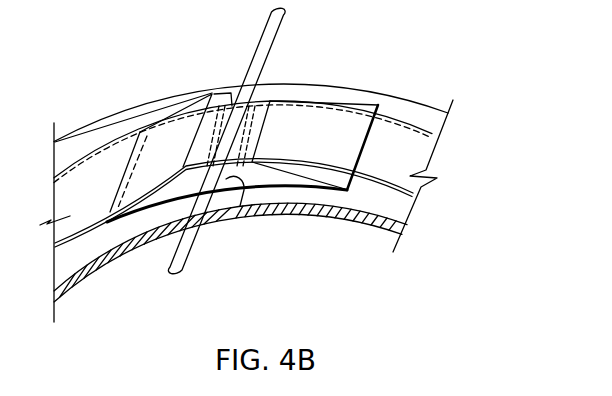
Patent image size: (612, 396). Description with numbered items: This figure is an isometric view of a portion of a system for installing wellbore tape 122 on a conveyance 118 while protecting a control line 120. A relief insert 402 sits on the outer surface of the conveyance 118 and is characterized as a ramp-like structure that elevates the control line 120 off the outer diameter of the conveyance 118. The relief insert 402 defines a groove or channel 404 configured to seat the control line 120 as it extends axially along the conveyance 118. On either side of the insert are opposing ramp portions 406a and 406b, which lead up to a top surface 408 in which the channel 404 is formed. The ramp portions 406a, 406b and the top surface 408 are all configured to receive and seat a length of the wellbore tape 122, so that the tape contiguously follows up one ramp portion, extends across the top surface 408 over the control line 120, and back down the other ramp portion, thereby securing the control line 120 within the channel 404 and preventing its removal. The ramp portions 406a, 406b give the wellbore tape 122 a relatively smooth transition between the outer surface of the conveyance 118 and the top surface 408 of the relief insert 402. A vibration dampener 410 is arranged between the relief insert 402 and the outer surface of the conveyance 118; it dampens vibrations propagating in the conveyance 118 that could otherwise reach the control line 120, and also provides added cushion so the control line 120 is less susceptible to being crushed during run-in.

The conveyance 118 is at (363, 232).
The control line 120 is at (280, 31).
The wellbore tape 122 is at (420, 146).
The relief insert 402 is at (235, 156).
The channel 404 is at (240, 206).
The ramp portion 406a is at (165, 131).
The ramp portion 406b is at (333, 117).
The top surface 408 is at (224, 106).
The vibration dampener 410 is at (132, 221).